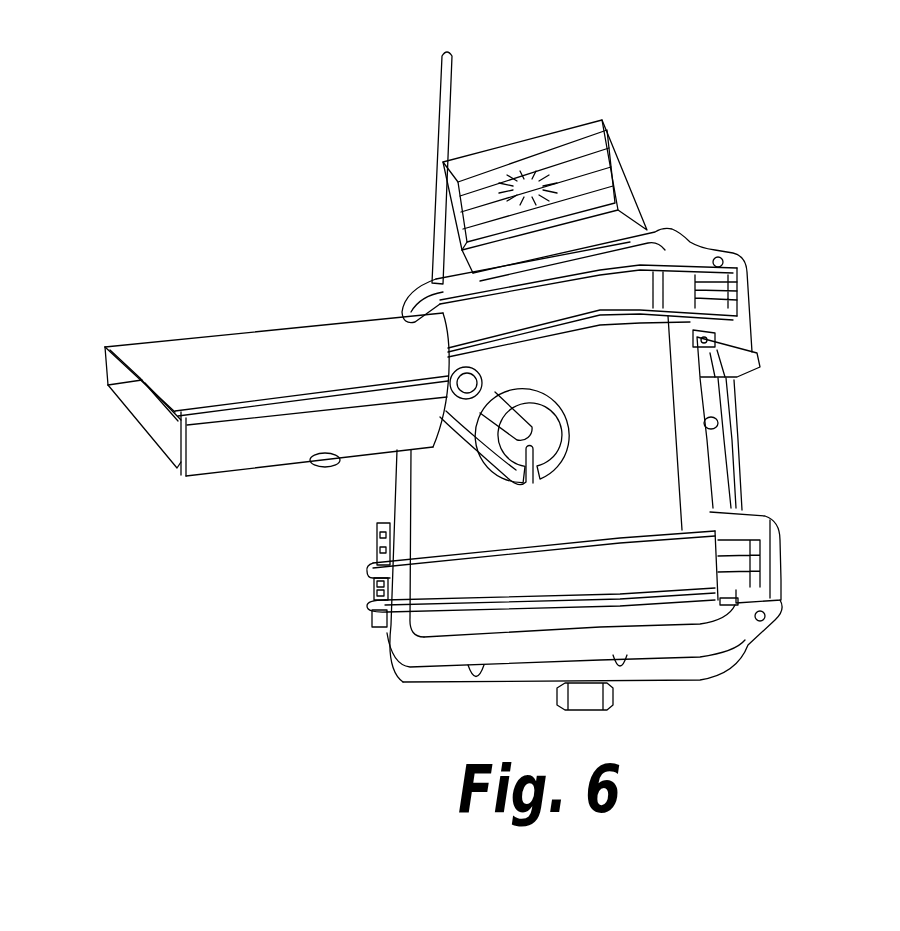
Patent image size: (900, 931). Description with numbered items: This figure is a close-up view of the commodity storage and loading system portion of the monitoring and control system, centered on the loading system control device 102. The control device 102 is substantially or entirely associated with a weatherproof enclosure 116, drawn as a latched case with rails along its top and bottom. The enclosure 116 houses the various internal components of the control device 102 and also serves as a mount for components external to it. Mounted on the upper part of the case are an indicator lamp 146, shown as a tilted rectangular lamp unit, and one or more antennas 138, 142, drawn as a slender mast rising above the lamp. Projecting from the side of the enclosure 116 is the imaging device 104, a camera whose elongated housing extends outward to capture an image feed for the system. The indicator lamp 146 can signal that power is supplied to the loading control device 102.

The loading system control device 102 is at (812, 207).
The imaging device 104 is at (222, 333).
The weatherproof enclosure 116 is at (740, 465).
The antenna 138 is at (351, 164).
The antenna 142 is at (436, 145).
The indicator lamp 146 is at (637, 180).